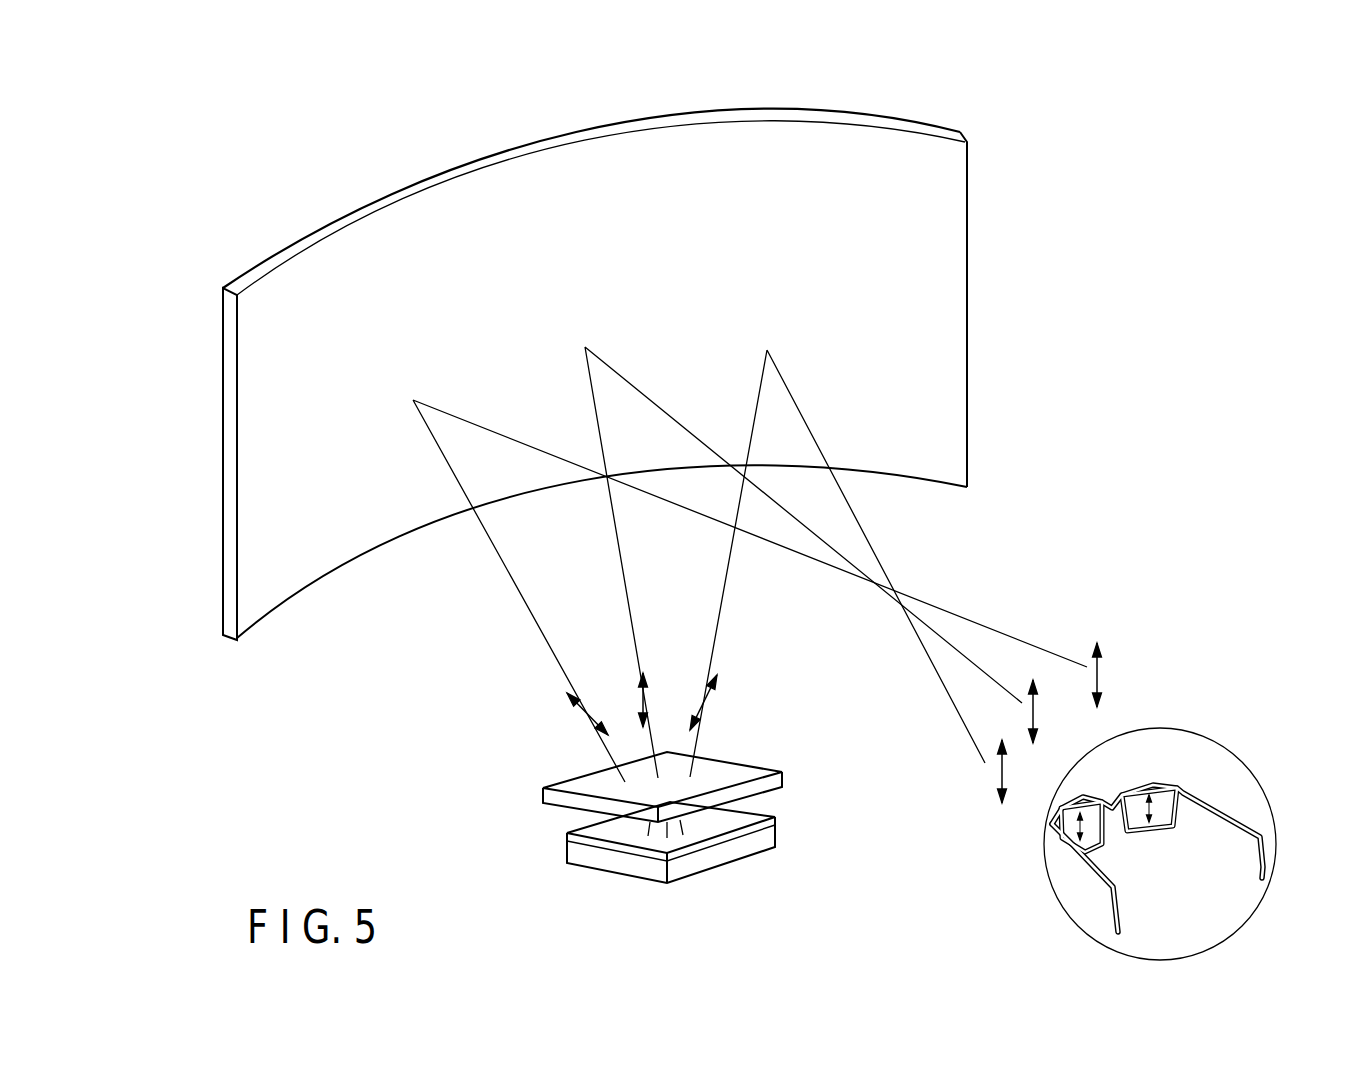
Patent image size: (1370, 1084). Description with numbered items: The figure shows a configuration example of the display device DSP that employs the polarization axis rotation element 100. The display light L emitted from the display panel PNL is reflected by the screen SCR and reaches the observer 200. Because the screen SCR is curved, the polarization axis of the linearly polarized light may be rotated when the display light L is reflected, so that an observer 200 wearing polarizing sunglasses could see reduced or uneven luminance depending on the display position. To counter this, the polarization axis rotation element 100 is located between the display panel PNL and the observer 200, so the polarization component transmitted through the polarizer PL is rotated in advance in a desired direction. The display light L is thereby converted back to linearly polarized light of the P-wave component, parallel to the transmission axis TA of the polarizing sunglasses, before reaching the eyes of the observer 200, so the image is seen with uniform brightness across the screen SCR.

The display device DSP is at (940, 76).
The screen SCR is at (967, 310).
The display light L is at (917, 720).
The polarization axis rotation element 100 is at (783, 777).
The polarizer PL is at (776, 820).
The display panel PNL is at (776, 840).
The transmission axis TA is at (1153, 808).
The observer 200 is at (1233, 752).